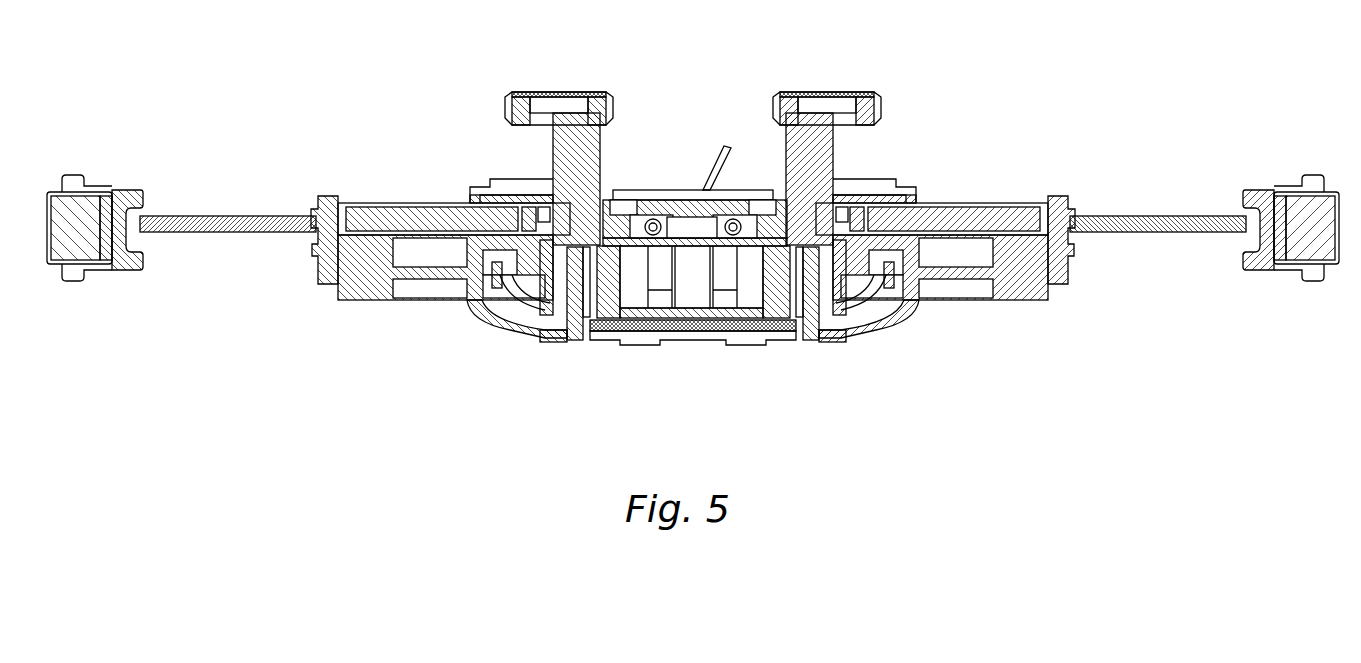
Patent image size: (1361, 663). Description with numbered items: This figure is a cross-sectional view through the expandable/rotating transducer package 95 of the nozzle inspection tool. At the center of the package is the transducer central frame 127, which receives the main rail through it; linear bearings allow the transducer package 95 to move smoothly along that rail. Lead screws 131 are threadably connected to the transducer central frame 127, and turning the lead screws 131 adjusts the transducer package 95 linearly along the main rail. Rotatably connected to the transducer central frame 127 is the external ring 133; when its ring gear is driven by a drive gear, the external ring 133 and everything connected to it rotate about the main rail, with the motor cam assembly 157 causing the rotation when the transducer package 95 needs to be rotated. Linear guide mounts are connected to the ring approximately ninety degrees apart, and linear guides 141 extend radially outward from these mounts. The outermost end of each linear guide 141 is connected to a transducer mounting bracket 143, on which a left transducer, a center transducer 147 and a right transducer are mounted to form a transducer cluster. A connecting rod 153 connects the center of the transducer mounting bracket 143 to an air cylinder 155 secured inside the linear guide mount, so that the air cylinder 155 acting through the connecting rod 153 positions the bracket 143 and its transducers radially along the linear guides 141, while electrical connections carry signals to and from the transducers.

The expandable/rotating transducer package 95 is at (698, 211).
The motor cam assembly 157 is at (818, 103).
The lead screws 131 is at (634, 198).
The air cylinder 155 is at (923, 203).
The connecting rod 153 is at (1083, 211).
The linear guides 141 is at (1113, 233).
The transducer mounting bracket 143 is at (1247, 243).
The center transducer 147 is at (1337, 217).
The transducer central frame 127 is at (782, 334).
The external ring 133 is at (873, 332).